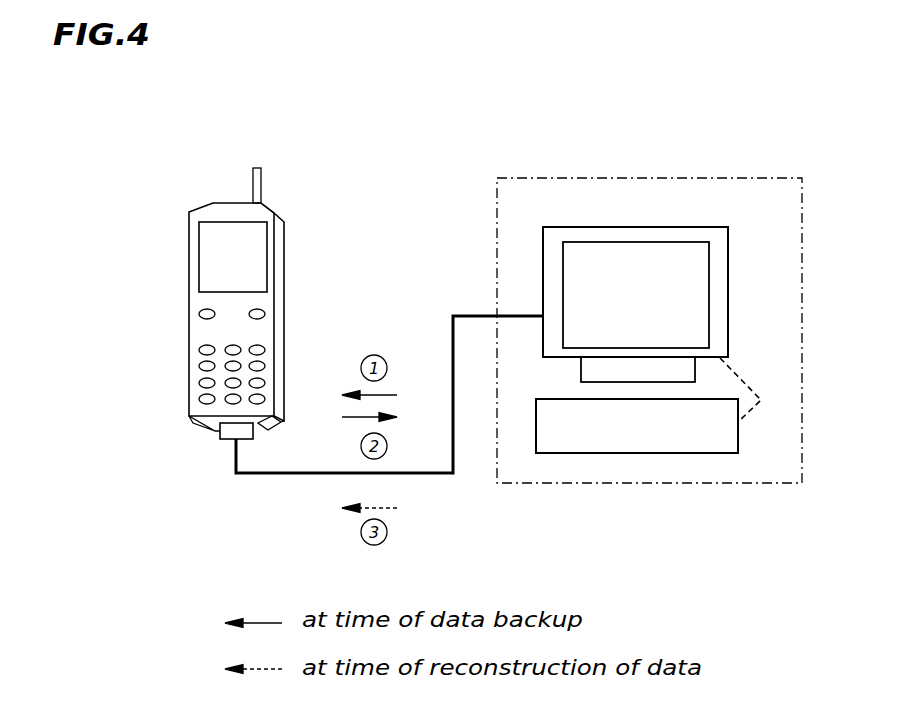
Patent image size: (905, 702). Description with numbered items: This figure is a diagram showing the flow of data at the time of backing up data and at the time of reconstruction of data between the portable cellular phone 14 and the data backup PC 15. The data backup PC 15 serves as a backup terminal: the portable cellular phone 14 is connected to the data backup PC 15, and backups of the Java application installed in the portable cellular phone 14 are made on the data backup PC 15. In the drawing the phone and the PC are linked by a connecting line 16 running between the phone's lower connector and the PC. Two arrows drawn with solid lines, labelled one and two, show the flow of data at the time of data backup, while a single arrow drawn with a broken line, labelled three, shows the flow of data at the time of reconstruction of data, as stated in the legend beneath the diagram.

The portable cellular phone 14 is at (212, 203).
The data backup PC 15 is at (560, 177).
The cable 16 is at (440, 475).